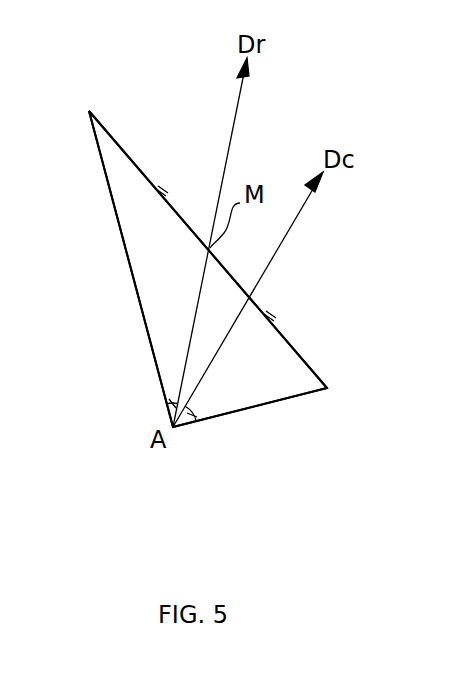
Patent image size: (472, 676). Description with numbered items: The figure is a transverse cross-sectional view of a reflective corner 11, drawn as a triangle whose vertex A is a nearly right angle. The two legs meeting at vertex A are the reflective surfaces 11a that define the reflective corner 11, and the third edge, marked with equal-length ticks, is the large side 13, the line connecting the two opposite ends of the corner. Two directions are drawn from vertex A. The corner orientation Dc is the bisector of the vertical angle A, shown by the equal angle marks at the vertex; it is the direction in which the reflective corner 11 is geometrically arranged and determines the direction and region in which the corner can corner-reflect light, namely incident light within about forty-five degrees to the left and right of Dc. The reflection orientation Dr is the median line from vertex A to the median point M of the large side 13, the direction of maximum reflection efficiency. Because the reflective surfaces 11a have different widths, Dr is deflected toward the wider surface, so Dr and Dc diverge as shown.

The reflective corner 11 is at (155, 152).
The reflective surface 11a is at (150, 308).
The large side 13 is at (287, 337).